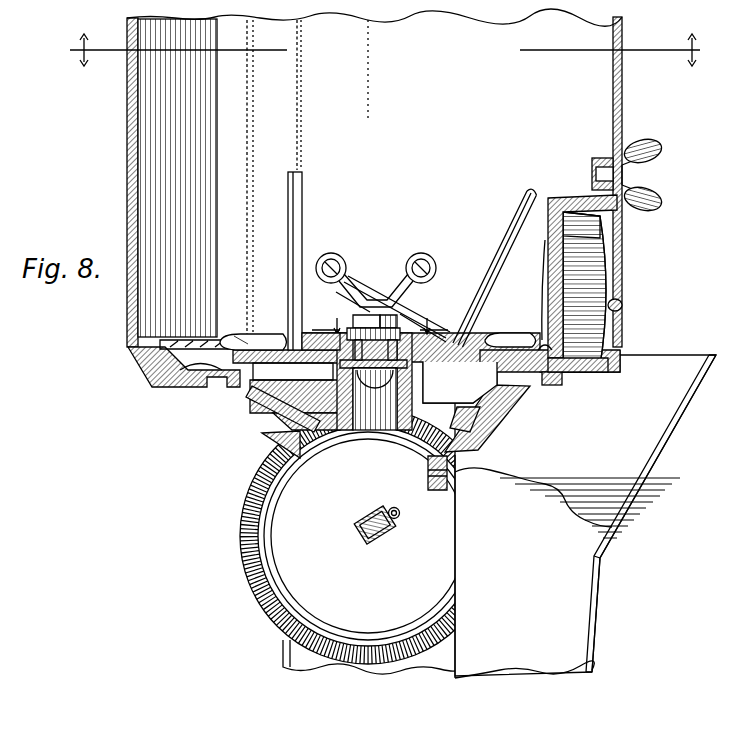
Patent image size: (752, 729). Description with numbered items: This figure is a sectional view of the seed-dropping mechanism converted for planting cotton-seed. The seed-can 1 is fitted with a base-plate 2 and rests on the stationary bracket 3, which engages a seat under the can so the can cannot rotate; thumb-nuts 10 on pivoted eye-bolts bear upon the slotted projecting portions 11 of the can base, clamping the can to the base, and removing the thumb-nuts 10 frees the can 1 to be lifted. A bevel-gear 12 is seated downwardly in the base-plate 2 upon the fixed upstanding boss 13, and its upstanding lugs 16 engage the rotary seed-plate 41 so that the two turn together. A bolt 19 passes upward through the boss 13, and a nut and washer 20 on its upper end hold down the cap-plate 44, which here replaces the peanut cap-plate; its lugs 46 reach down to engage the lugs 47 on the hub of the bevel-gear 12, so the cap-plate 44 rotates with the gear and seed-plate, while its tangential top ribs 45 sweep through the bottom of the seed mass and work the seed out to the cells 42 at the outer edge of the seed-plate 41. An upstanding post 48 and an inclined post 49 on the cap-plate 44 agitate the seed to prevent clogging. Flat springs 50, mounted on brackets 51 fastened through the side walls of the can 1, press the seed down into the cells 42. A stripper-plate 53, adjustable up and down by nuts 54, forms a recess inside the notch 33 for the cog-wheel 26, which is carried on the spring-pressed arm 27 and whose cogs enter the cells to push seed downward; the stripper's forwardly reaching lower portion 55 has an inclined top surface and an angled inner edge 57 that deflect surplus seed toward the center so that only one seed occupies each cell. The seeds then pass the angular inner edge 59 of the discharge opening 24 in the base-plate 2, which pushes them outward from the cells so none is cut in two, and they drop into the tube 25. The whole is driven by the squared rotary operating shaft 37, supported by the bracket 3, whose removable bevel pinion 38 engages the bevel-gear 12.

The seed-can 1 is at (617, 82).
The base-plate 2 is at (135, 354).
The stationary bracket 3 is at (282, 663).
The thumb-nut 10 is at (382, 50).
The projecting portion 11 is at (380, 324).
The bevel-gear 12 is at (262, 403).
The boss 13 is at (381, 430).
The upstanding lug 16 is at (248, 382).
The bolt 19 is at (372, 374).
The nut and washer 20 is at (360, 322).
The discharge opening 24 is at (585, 376).
The tube 25 is at (585, 588).
The cog-wheel 26 is at (608, 262).
The arm 27 is at (622, 303).
The notch 33 is at (608, 232).
The rotary operating shaft 37 is at (384, 543).
The bevel pinion 38 is at (248, 582).
The seed-plate 41 is at (176, 386).
The cell 42 is at (165, 372).
The cap-plate 44 is at (248, 335).
The tangential top rib 45 is at (262, 333).
The lug 46 is at (418, 362).
The lug 47 is at (300, 336).
The upstanding post 48 is at (288, 201).
The inclined post 49 is at (500, 245).
The flat spring 50 is at (418, 315).
The bracket 51 is at (386, 298).
The stripper-plate 53 is at (556, 252).
The nut 54 is at (600, 170).
The lower portion 55 is at (540, 342).
The inner edge 57 is at (527, 350).
The angular inner edge 59 is at (554, 382).